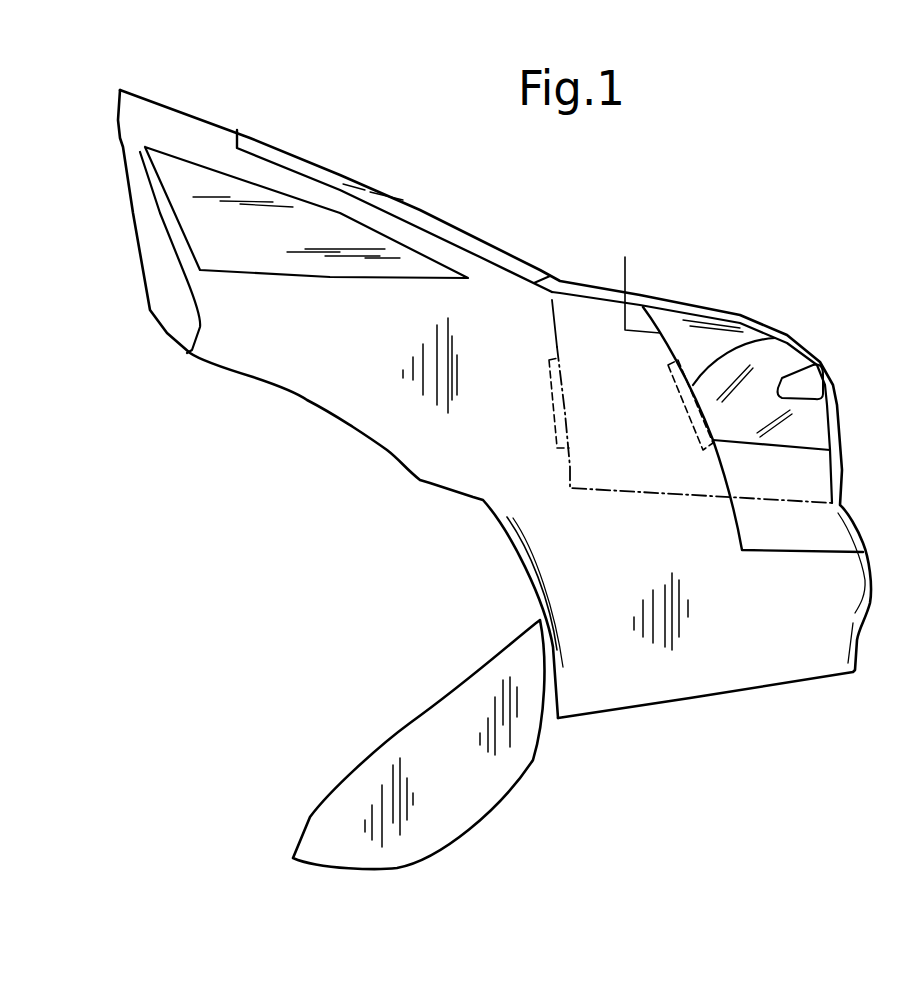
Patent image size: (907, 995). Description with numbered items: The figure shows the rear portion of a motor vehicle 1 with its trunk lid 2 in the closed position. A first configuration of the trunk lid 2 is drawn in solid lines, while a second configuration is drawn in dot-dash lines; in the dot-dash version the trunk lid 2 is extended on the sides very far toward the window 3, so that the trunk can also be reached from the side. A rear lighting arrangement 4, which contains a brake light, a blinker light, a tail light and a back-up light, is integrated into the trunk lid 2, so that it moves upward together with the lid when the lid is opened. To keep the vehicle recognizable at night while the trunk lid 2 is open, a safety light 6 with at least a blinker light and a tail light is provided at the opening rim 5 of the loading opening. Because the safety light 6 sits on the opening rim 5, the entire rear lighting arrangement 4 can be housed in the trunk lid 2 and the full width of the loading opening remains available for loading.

The motor vehicle 1 is at (410, 310).
The trunk lid 2 is at (698, 348).
The window 3 is at (318, 177).
The rear lighting arrangement 4 is at (757, 377).
The opening rim 5 is at (626, 272).
The safety light 6 is at (550, 402).